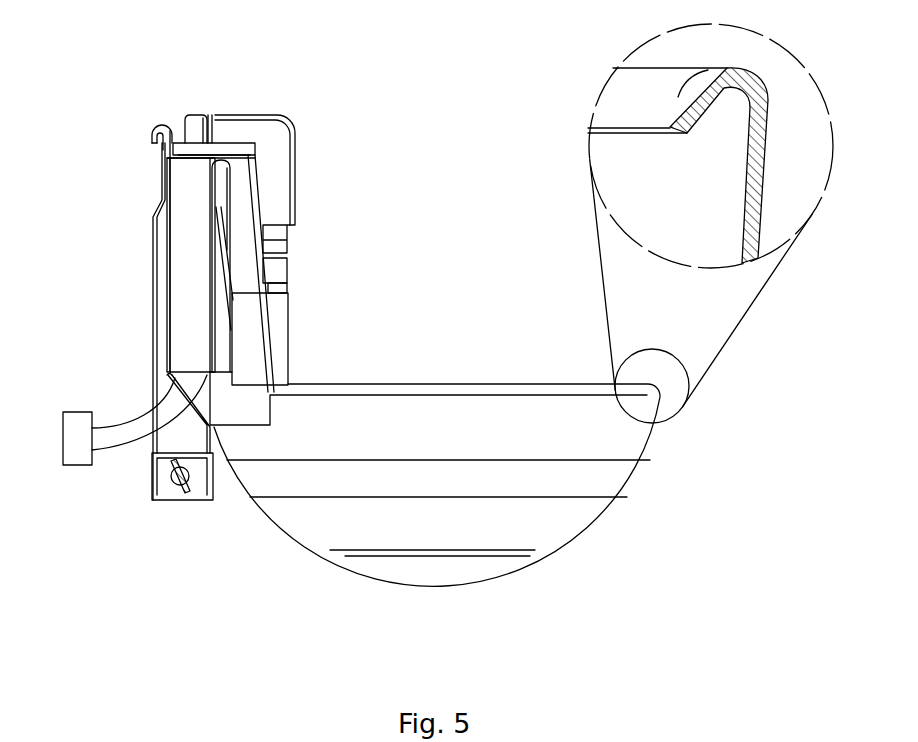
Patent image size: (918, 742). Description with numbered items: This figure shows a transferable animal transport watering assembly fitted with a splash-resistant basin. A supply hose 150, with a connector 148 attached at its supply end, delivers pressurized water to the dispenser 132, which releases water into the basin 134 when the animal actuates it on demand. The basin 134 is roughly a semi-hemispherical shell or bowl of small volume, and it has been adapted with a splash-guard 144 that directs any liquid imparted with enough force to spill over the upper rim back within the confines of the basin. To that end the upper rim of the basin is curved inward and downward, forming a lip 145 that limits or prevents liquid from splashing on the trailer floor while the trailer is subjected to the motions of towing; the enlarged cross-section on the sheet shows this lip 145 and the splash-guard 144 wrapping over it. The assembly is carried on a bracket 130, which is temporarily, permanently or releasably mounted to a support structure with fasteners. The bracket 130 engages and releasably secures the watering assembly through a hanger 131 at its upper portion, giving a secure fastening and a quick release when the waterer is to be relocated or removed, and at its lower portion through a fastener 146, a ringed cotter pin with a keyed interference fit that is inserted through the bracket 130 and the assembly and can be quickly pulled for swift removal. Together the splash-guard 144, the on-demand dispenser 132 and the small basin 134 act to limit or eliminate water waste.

The bracket 130 is at (152, 221).
The hanger 131 is at (160, 122).
The dispenser 132 is at (283, 167).
The basin 134 is at (290, 540).
The splash-guard 144 is at (755, 60).
The lip 145 is at (622, 98).
The fastener 146 is at (177, 494).
The connector 148 is at (82, 420).
The supply hose 150 is at (121, 452).